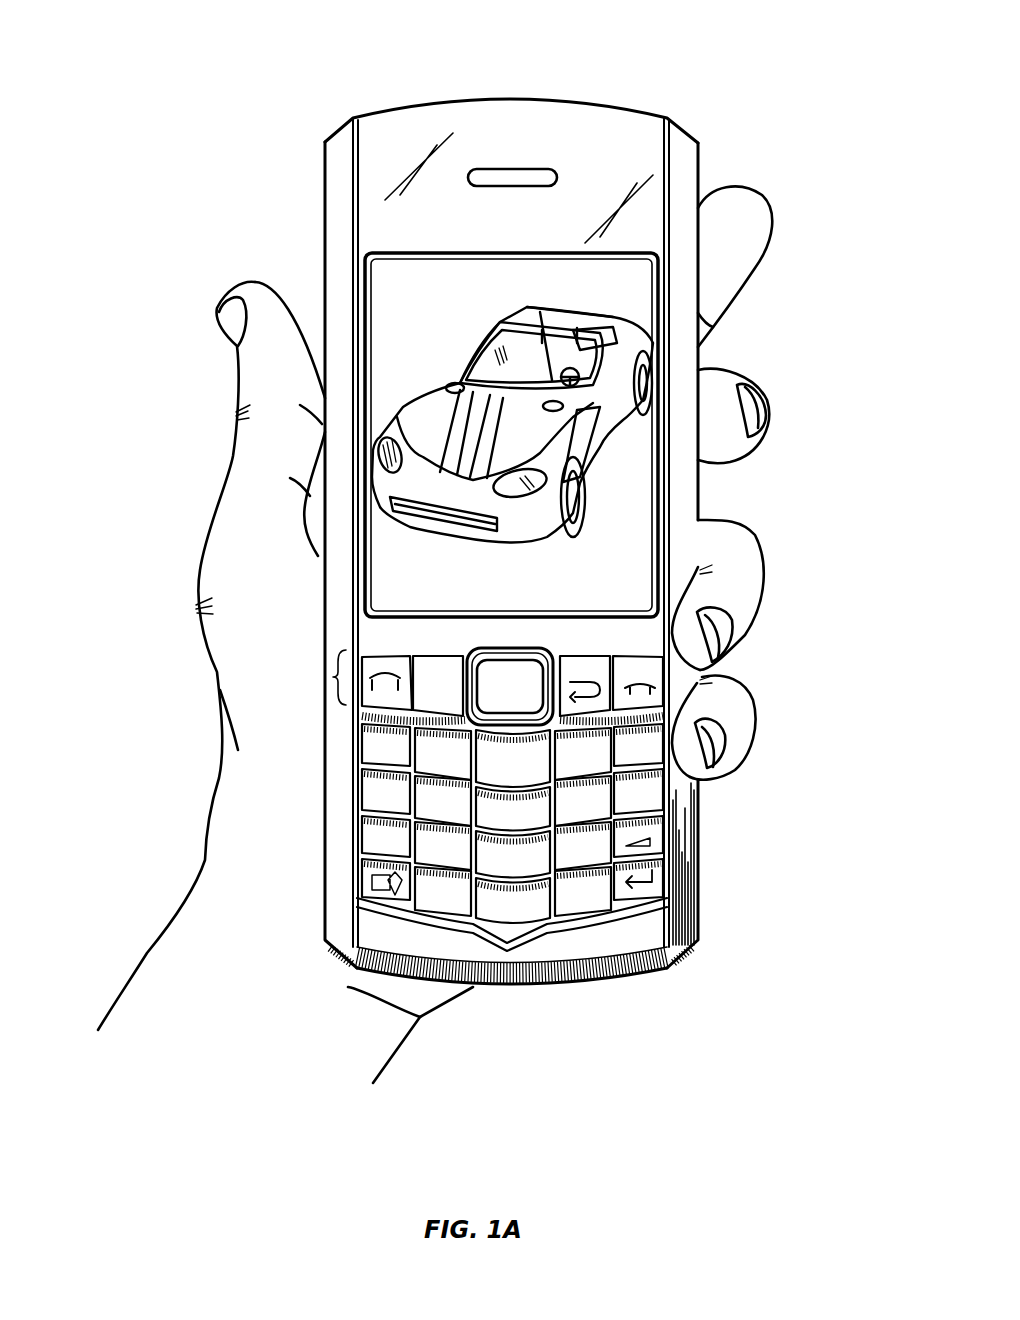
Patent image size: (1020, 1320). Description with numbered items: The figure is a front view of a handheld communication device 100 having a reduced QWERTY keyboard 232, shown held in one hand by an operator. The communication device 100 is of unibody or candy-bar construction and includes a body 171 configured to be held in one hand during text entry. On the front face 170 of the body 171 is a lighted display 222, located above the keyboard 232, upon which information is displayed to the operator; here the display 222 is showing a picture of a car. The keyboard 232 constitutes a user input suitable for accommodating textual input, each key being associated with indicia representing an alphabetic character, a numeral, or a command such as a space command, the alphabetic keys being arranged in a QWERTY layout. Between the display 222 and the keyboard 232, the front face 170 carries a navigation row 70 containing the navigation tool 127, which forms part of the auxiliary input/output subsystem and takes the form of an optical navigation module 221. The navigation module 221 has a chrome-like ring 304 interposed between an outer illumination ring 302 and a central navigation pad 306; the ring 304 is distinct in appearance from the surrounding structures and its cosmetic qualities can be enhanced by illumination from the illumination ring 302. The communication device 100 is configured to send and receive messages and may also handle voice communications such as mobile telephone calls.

The handheld communication device 100 is at (652, 35).
The body 171 is at (318, 143).
The front face 170 is at (687, 178).
The lighted display 222 is at (390, 292).
The navigation pad 306 is at (477, 652).
The ring 304 is at (511, 658).
The illumination ring 302 is at (550, 660).
The navigation row 70 is at (333, 677).
The optical navigation module 221 is at (510, 684).
The navigation tool 127 is at (537, 732).
The keyboard 232 is at (523, 955).